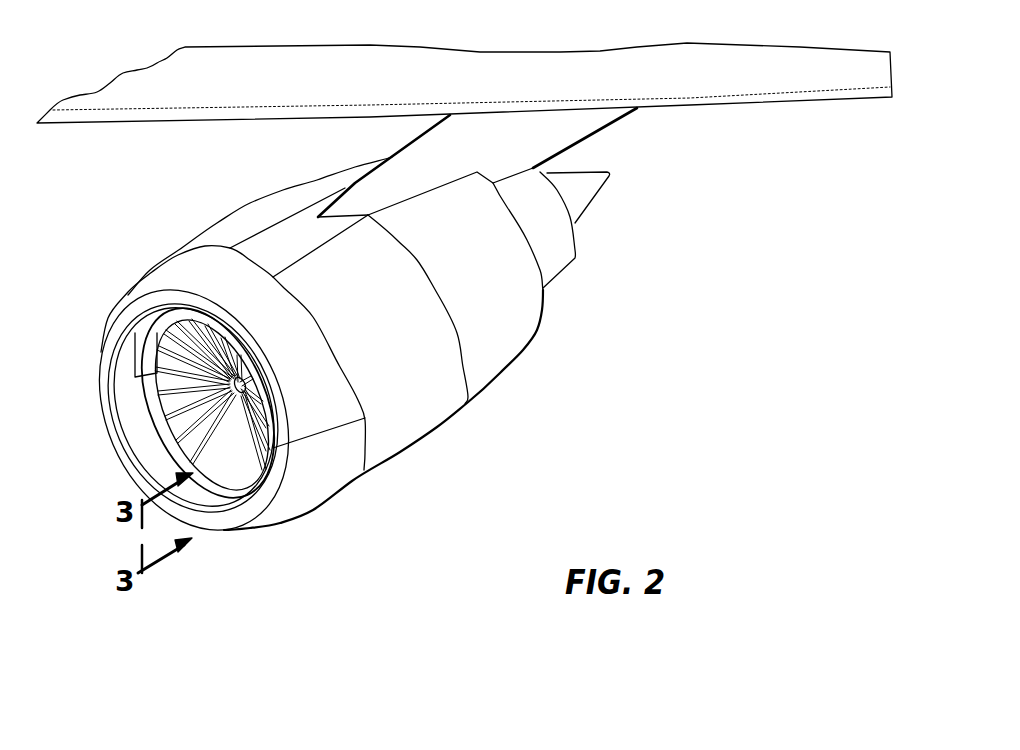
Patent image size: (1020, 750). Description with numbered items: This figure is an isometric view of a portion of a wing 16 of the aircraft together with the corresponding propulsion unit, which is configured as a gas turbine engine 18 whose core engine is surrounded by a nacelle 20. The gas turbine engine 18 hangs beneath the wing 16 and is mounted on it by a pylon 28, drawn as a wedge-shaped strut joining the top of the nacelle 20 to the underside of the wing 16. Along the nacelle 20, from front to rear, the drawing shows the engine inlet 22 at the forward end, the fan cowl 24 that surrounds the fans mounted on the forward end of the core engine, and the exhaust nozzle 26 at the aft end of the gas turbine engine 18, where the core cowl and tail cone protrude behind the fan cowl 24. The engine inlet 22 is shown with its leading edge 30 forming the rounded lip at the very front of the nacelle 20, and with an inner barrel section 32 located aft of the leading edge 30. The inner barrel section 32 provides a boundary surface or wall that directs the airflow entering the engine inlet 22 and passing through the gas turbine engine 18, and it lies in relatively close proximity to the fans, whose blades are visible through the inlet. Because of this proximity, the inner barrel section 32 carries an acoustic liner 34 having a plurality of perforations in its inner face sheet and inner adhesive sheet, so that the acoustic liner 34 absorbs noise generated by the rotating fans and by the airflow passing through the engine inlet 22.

The wing 16 is at (170, 67).
The gas turbine engine 18 is at (190, 212).
The nacelle 20 is at (292, 192).
The engine inlet 22 is at (131, 375).
The fan cowl 24 is at (420, 420).
The exhaust nozzle 26 is at (557, 250).
The pylon 28 is at (578, 132).
The leading edge 30 is at (134, 465).
The inner barrel section 32 is at (142, 412).
The acoustic liner 34 is at (240, 493).